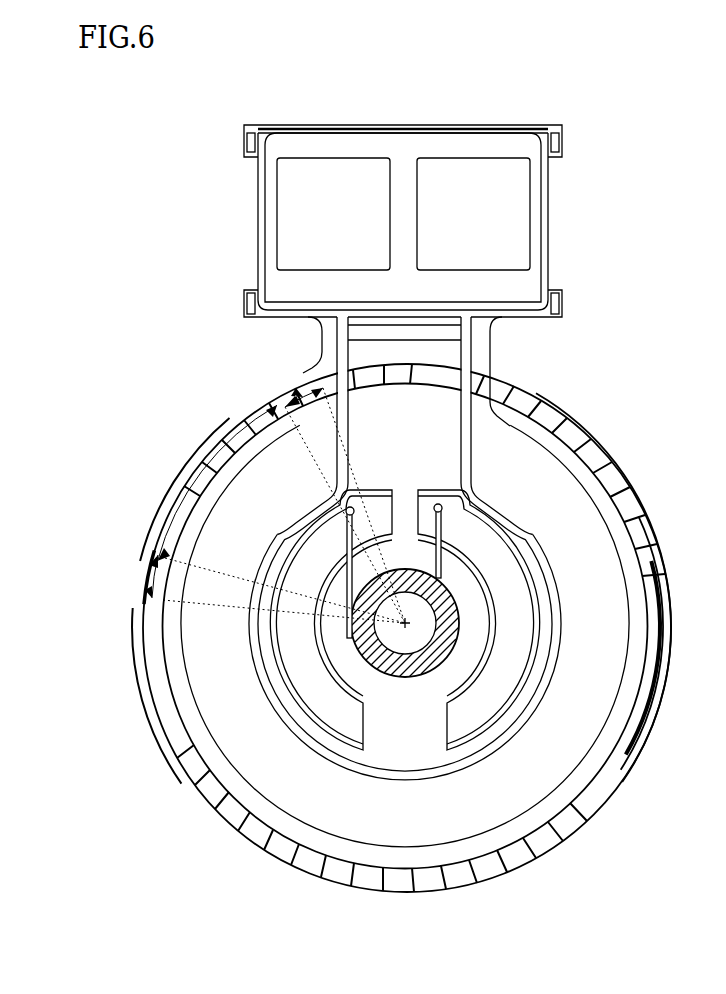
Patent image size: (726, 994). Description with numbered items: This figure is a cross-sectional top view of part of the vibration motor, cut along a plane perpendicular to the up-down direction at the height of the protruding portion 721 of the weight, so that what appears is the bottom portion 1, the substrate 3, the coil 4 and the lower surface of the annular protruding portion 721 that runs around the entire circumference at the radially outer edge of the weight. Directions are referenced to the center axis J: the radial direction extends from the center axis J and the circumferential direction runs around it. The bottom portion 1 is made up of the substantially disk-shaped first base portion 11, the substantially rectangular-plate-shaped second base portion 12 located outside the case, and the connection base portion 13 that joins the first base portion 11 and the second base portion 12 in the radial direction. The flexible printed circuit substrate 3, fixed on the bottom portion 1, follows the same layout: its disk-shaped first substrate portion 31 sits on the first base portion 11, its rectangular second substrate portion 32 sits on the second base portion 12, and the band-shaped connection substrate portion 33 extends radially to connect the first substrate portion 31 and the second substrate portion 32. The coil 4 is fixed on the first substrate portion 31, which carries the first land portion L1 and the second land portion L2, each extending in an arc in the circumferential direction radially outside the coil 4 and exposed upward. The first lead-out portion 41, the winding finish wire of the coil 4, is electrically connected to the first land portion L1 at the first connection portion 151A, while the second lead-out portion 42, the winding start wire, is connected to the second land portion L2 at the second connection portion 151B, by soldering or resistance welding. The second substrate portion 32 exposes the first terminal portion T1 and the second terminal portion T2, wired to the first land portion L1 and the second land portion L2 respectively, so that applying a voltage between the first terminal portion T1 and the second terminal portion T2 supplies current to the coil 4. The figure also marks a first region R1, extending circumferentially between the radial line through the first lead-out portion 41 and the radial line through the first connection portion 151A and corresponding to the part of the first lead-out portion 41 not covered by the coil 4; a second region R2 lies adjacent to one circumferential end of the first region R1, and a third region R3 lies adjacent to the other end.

The bottom portion 1 is at (563, 137).
The substrate 3 is at (517, 127).
The coil 4 is at (440, 617).
The first base portion 11 is at (636, 774).
The second base portion 12 is at (547, 277).
The connection base portion 13 is at (313, 333).
The first substrate portion 31 is at (553, 590).
The second substrate portion 32 is at (288, 125).
The connection substrate portion 33 is at (473, 343).
The first lead-out portion 41 is at (345, 517).
The second lead-out portion 42 is at (448, 535).
The first connection portion 151A is at (333, 492).
The second connection portion 151B is at (472, 498).
The protruding portion 721 is at (560, 410).
The first terminal portion T1 is at (307, 220).
The second terminal portion T2 is at (512, 222).
The first land portion L1 is at (333, 705).
The second land portion L2 is at (483, 702).
The center axis J is at (408, 624).
The first region R1 is at (217, 482).
The second region R2 is at (345, 490).
The third region R3 is at (263, 589).